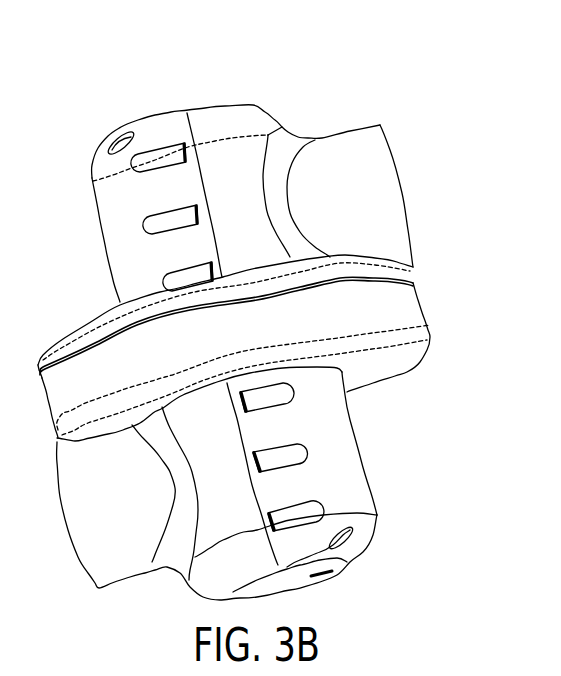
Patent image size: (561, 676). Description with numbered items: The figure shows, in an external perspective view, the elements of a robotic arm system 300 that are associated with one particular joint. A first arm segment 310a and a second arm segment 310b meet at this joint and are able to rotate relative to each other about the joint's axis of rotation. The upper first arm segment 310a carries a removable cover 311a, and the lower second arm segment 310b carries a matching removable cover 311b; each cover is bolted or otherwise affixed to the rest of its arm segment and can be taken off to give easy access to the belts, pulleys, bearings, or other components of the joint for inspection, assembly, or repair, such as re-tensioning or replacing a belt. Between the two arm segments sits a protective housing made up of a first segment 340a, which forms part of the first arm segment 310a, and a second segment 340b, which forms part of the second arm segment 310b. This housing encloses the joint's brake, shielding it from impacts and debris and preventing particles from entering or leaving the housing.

The robotic arm system 300 is at (407, 101).
The first arm segment 310a is at (397, 207).
The removable cover 311a is at (112, 203).
The first segment of protective housing 340a is at (413, 273).
The second segment of protective housing 340b is at (417, 323).
The removable cover 311b is at (357, 470).
The second arm segment 310b is at (98, 573).